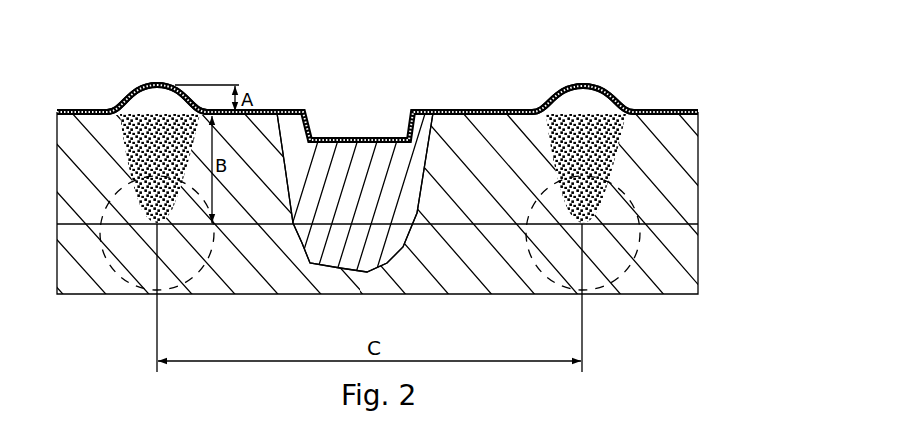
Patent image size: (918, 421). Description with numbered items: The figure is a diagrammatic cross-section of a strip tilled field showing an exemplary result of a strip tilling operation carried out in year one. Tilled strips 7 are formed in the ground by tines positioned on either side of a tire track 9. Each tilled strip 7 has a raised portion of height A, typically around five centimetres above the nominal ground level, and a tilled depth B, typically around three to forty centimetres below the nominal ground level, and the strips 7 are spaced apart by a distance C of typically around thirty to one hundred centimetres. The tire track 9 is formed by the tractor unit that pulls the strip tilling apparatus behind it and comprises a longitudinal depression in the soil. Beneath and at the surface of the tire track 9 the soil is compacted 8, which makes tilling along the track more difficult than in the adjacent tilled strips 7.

The tilled strip 7 is at (148, 84).
The compacted soil 8 is at (301, 108).
The tire track 9 is at (369, 134).